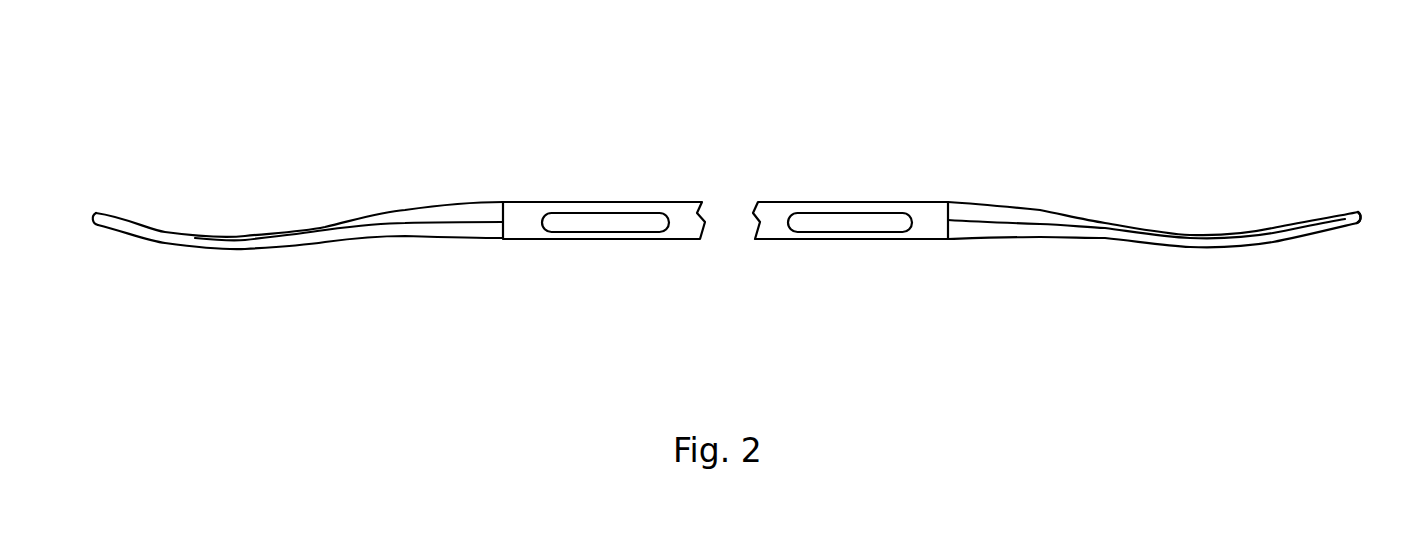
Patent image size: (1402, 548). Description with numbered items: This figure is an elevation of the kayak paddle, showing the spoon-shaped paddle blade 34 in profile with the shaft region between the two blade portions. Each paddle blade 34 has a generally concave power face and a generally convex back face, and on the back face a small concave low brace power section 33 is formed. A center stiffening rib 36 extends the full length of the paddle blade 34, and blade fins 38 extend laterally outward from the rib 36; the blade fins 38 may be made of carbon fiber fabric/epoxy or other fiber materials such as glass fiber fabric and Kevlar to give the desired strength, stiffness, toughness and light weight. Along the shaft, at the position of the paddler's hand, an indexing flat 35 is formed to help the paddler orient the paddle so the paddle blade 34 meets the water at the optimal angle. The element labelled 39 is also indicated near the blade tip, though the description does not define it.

The low brace power section 33 is at (1160, 211).
The paddle blade 34 is at (733, 211).
The indexing flat 35 is at (593, 222).
The center stiffening rib 36 is at (1065, 210).
The blade fins 38 is at (162, 232).
The right blade tip 39 is at (1362, 208).